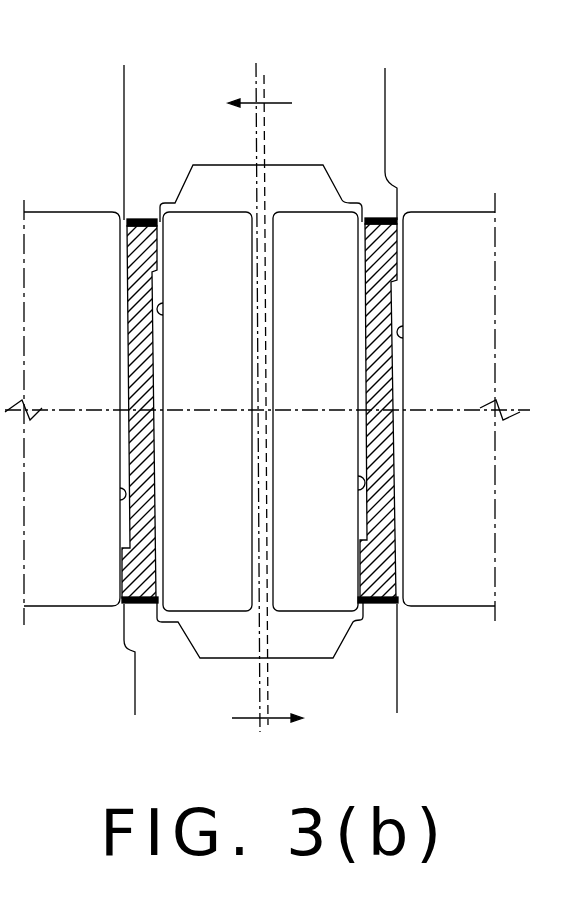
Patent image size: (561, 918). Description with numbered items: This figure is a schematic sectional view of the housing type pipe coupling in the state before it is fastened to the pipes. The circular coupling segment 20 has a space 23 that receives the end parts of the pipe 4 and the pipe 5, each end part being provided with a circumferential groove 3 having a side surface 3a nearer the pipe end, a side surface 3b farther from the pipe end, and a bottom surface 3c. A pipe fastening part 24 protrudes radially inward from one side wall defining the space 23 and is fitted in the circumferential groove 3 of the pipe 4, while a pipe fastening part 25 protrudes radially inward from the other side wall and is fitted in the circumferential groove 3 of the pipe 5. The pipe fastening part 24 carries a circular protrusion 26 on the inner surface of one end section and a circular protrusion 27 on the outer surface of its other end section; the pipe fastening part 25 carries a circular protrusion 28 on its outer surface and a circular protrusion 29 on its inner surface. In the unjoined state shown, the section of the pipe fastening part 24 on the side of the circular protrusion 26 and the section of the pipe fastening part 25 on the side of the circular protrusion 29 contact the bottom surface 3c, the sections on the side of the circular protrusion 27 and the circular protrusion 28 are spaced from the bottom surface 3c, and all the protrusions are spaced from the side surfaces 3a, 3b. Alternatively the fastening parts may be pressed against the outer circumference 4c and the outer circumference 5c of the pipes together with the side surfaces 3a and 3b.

The circular coupling segment 20 is at (320, 152).
The space 23 is at (312, 195).
The circumferential groove 3 is at (127, 325).
The side surface 3a is at (163, 310).
The side surface 3b is at (127, 490).
The bottom surface 3c is at (157, 367).
The pipe 4 is at (220, 230).
The outer circumference 4c is at (58, 211).
The pipe 5 is at (322, 230).
The outer circumference 5c is at (460, 211).
The pipe fastening part 24 is at (143, 437).
The pipe fastening part 25 is at (383, 453).
The circular protrusion 26 is at (147, 222).
The circular protrusion 27 is at (130, 578).
The circular protrusion 28 is at (396, 222).
The circular protrusion 29 is at (365, 570).